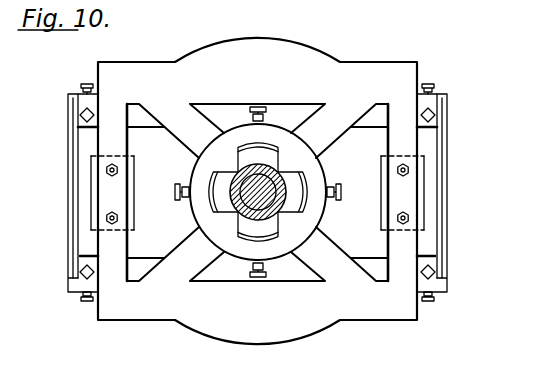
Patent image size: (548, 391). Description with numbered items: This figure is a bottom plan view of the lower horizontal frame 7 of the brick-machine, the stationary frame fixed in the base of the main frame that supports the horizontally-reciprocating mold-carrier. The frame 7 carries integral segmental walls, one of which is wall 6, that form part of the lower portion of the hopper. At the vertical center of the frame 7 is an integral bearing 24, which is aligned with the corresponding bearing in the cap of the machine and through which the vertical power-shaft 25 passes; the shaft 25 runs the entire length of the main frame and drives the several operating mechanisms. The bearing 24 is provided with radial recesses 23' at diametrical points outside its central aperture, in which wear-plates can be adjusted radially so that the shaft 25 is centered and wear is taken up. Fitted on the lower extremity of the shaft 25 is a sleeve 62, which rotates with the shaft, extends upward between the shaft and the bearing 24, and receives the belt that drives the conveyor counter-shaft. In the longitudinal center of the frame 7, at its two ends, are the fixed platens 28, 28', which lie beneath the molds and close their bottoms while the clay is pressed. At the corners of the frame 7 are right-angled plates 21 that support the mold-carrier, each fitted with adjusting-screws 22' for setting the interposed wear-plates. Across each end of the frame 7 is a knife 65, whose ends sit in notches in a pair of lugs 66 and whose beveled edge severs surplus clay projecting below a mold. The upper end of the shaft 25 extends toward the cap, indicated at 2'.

The shaft 2' is at (260, 10).
The upwardly-extending wall 6 is at (245, 346).
The horizontal stationary frame 7 is at (371, 54).
The right-angled plate 21 is at (84, 100).
The adjusting-screw 22' is at (237, 189).
The radial recess 23' is at (258, 192).
The bearing 24 is at (292, 188).
The vertical power-shaft 25 is at (241, 206).
The fixed platen 28 is at (125, 193).
The fixed platen 28' is at (387, 193).
The sleeve 62 is at (281, 170).
The knife 65 is at (76, 218).
The lug 66 is at (68, 100).